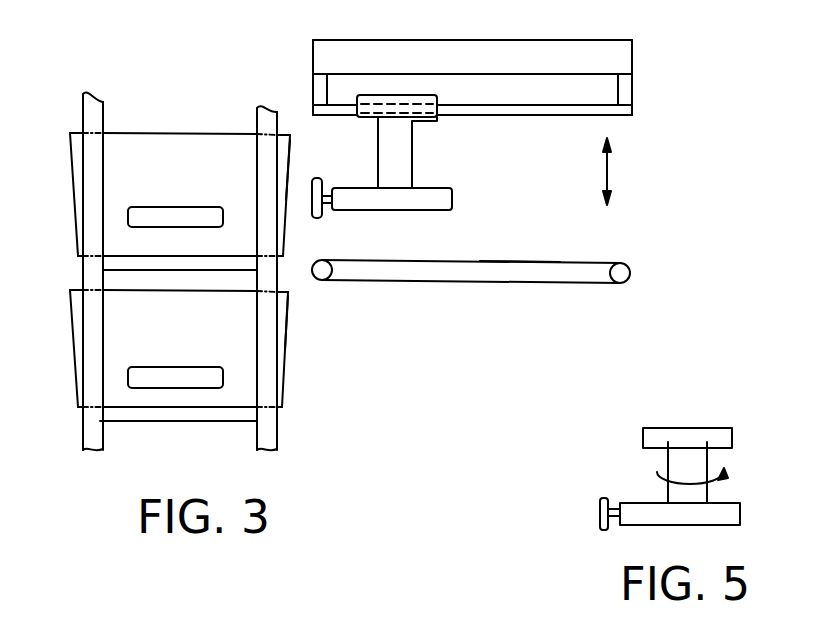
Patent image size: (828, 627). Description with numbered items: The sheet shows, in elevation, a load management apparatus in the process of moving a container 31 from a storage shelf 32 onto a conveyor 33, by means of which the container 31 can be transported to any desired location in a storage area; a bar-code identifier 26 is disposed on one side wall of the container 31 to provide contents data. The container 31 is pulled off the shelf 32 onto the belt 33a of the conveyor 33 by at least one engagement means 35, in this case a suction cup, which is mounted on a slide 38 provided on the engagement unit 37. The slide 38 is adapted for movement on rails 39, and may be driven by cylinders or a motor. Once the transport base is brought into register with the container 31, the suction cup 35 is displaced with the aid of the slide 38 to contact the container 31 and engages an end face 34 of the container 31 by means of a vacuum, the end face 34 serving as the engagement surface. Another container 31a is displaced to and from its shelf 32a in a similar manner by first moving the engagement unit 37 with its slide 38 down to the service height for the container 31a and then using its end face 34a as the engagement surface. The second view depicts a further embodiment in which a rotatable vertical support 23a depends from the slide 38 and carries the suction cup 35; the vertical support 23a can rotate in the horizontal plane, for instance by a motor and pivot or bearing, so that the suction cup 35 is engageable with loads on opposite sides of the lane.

In FIG. 3, the bar-code identifier 26 is at (128, 214).
In FIG. 3, the container 31 is at (152, 147).
In FIG. 3, the container 31a is at (179, 348).
In FIG. 3, the shelf 32 is at (98, 262).
In FIG. 3, the shelf 32a is at (200, 414).
In FIG. 3, the conveyor 33 is at (578, 270).
In FIG. 3, the belt 33a is at (538, 262).
In FIG. 3, the end face 34 is at (288, 163).
In FIG. 3, the end face 34a is at (281, 338).
In FIG. 3, the engagement means 35 is at (318, 178).
In FIG. 5, the engagement means 35 is at (602, 500).
In FIG. 3, the engagement unit 37 is at (625, 58).
In FIG. 3, the slide 38 is at (433, 118).
In FIG. 5, the slide 38 is at (657, 438).
In FIG. 3, the rails 39 is at (560, 112).
In FIG. 5, the rotatable vertical support 23a is at (687, 460).